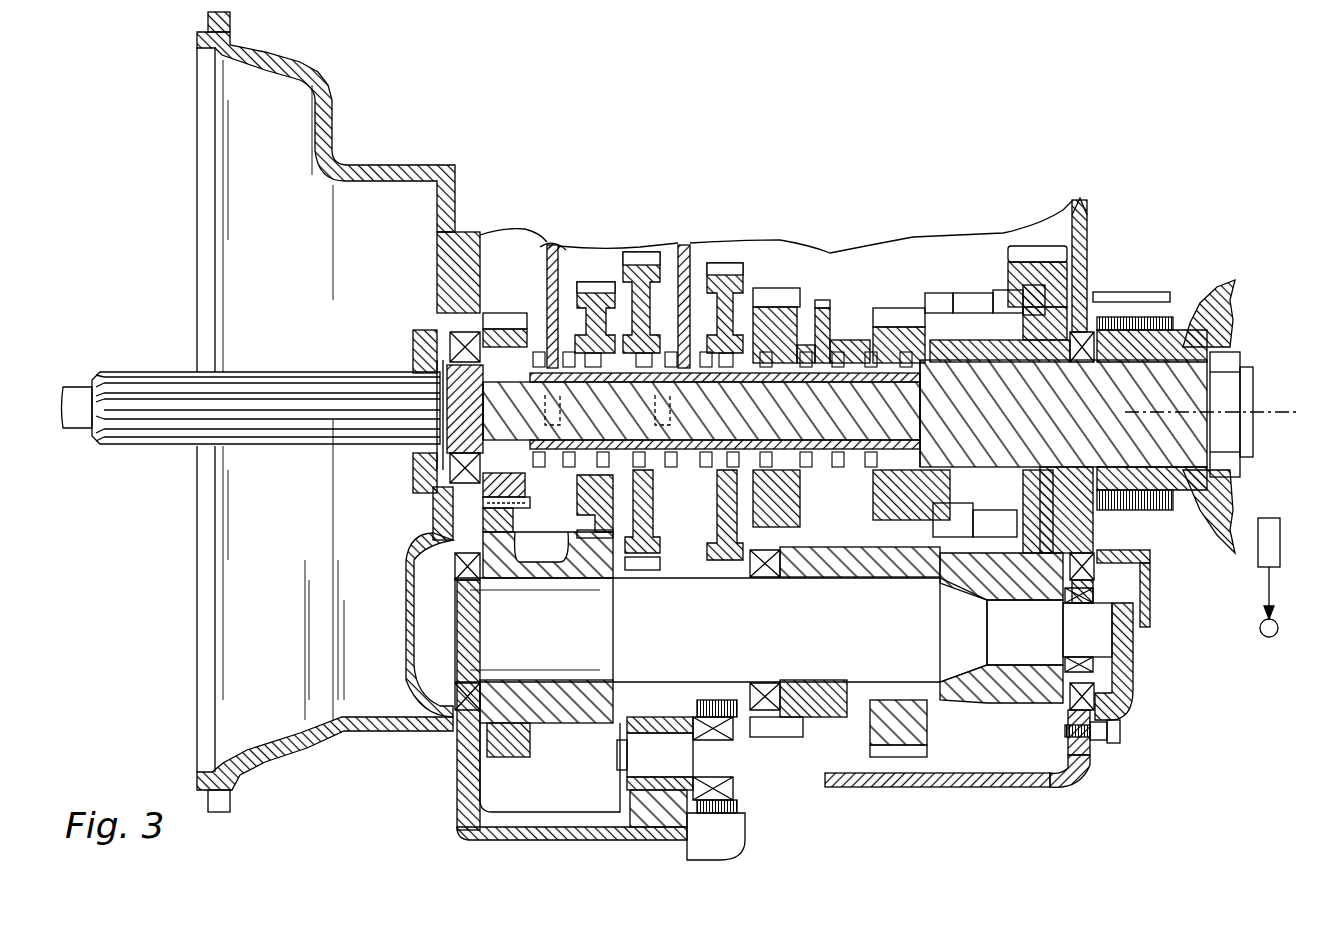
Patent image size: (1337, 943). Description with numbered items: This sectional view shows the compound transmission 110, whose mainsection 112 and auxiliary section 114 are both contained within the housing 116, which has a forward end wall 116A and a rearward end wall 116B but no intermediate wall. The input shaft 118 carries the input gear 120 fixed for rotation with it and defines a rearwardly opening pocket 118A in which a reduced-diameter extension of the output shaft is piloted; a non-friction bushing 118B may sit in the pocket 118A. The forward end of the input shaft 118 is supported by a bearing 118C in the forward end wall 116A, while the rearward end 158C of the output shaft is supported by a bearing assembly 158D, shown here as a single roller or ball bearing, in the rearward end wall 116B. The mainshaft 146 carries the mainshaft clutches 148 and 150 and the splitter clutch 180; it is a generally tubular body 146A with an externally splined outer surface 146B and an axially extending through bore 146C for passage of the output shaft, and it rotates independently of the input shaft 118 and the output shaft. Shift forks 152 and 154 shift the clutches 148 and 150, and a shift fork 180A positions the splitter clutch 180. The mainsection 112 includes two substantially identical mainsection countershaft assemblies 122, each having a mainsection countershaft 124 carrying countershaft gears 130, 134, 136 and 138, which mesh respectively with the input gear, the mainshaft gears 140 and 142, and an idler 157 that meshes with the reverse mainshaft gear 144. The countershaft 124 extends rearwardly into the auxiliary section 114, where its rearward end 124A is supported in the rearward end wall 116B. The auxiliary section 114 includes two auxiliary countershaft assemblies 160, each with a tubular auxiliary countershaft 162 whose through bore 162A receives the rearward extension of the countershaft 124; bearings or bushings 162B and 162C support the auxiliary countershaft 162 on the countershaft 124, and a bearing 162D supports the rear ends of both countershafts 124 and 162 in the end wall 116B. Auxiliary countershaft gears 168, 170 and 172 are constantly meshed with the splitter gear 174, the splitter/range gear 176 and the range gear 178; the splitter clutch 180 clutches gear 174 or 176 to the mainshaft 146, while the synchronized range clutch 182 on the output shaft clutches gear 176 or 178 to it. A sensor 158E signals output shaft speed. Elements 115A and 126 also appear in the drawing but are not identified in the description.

The compound transmission 110 is at (1120, 198).
The mainsection 112 is at (752, 849).
The auxiliary section 114 is at (1102, 818).
The input shaft end 115A is at (467, 414).
The housing 116 is at (1053, 790).
The forward end wall 116A is at (467, 773).
The rearward end wall 116B is at (1087, 523).
The input shaft 118 is at (312, 397).
The rearwardly opening pocket 118A is at (483, 372).
The non-friction bushing 118B is at (418, 462).
The bearing 118C is at (455, 335).
The input gear 120 is at (497, 318).
The mainsection countershaft assembly 122 is at (548, 724).
The mainsection countershaft 124 is at (759, 630).
The rearward end 124A is at (1093, 637).
The cover plate 126 is at (410, 580).
The countershaft gear 130 is at (512, 753).
The countershaft gear 134 is at (563, 723).
The countershaft gear 136 is at (630, 693).
The countershaft gear 138 is at (723, 570).
The mainshaft gear 140 is at (575, 513).
The mainshaft gear 142 is at (655, 480).
The reverse mainshaft gear 144 is at (722, 505).
The mainshaft 146 is at (831, 375).
The generally tubular body 146A is at (940, 365).
The externally splined outer surface 146B is at (742, 440).
The axially extending through bore 146C is at (897, 443).
The mainshaft clutch 148 is at (575, 345).
The mainshaft clutch 150 is at (728, 385).
The shift fork 152 is at (548, 247).
The shift fork 154 is at (690, 248).
The idler 157 is at (740, 813).
The rearward end of output shaft 158C is at (1225, 328).
The bearing assembly 158D is at (1085, 330).
The sensor 158E is at (1282, 540).
The auxiliary countershaft assembly 160 is at (1010, 705).
The auxiliary countershaft 162 is at (940, 693).
The through bore 162A is at (815, 690).
The bearing or bushing 162B is at (760, 578).
The bearing or bushing 162C is at (1065, 627).
The bearing 162D is at (1097, 688).
The auxiliary countershaft gear 168 is at (762, 730).
The auxiliary countershaft gear 170 is at (903, 757).
The auxiliary countershaft gear 172 is at (1066, 739).
The splitter gear 174 is at (768, 293).
The splitter/range gear 176 is at (895, 308).
The range gear 178 is at (1040, 260).
The splitter clutch 180 is at (835, 350).
The shift fork 180A is at (818, 300).
The synchronized range clutch 182 is at (1040, 372).